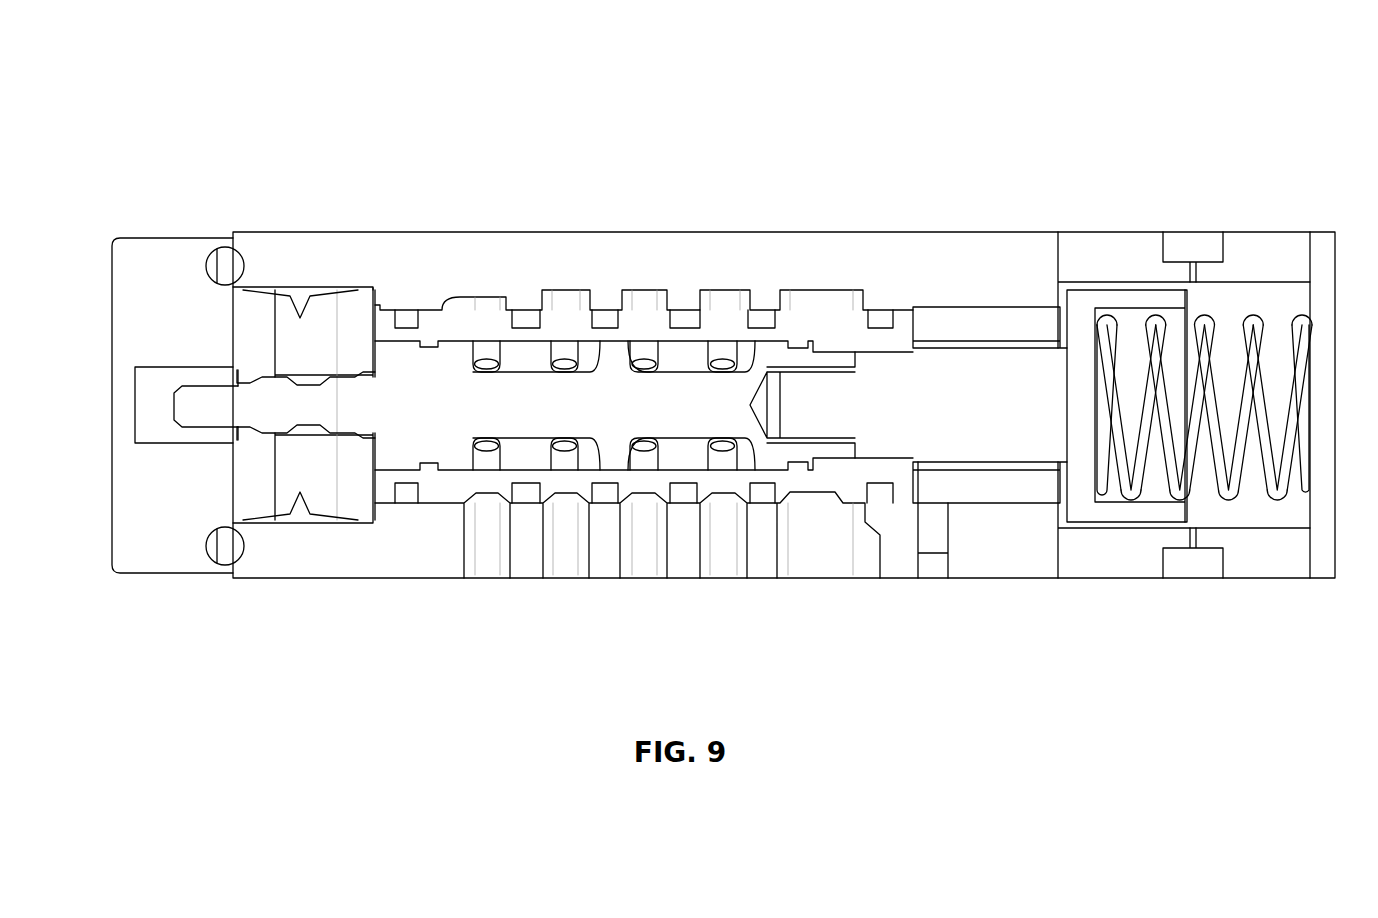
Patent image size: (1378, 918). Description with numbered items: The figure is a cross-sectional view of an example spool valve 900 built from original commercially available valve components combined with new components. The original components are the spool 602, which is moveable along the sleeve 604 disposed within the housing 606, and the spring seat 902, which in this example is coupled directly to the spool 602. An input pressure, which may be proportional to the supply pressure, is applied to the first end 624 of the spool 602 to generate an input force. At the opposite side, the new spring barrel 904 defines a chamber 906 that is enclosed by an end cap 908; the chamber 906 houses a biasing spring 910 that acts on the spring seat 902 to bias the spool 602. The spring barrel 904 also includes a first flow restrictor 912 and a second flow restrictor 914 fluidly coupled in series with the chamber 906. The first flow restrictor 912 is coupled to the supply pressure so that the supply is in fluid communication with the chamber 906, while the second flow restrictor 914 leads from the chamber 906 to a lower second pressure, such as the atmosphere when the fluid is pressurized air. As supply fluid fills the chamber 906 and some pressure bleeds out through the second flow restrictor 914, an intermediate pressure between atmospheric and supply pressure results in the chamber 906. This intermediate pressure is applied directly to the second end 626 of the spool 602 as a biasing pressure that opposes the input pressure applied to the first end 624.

The spool valve 900 is at (389, 100).
The housing 606 is at (418, 246).
The first end 624 is at (368, 448).
The sleeve 604 is at (657, 470).
The spool 602 is at (567, 430).
The spring seat 902 is at (910, 375).
The spring barrel 904 is at (1093, 243).
The second end 626 is at (865, 453).
The chamber 906 is at (1254, 518).
The end cap 908 is at (1322, 243).
The biasing spring 910 is at (1252, 330).
The first flow restrictor 912 is at (1193, 556).
The second flow restrictor 914 is at (1193, 252).